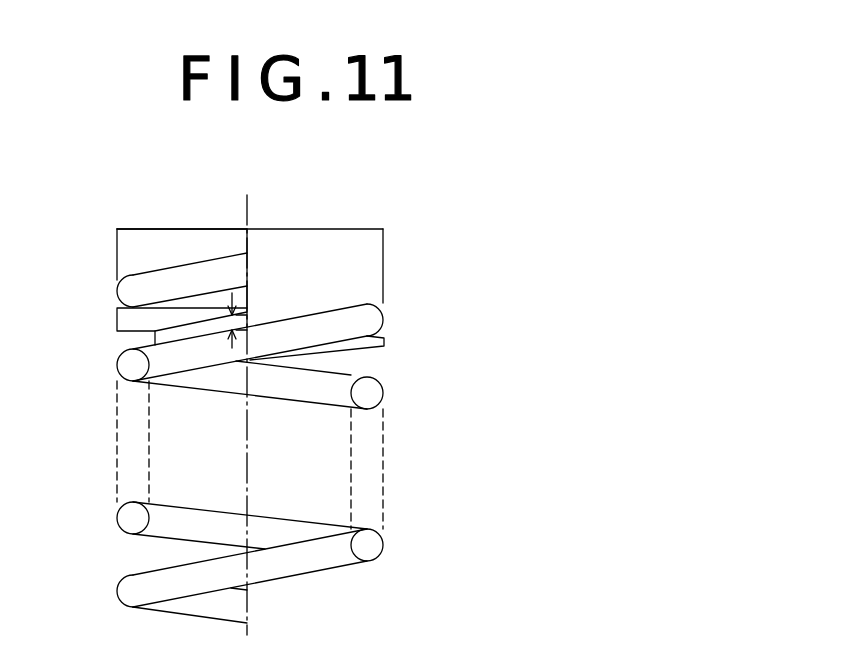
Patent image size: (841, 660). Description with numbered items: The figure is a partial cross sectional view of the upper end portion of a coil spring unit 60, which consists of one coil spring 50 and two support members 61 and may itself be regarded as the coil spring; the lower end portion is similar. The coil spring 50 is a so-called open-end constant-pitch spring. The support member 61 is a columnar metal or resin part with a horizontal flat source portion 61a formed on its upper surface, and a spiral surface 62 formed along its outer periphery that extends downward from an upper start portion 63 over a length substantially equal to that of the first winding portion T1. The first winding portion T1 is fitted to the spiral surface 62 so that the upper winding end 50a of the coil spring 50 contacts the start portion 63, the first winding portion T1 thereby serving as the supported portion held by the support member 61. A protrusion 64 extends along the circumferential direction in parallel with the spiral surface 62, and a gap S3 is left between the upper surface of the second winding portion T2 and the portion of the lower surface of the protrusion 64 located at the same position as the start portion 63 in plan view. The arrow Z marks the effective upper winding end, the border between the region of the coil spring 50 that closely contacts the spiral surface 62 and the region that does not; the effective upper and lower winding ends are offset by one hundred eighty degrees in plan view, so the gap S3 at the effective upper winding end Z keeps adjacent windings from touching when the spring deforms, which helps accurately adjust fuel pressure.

The coil spring 50 is at (298, 389).
The upper winding end 50a is at (243, 252).
The coil spring unit 60 is at (266, 265).
The support member 61 is at (370, 252).
The horizontal flat source portion 61a is at (148, 238).
The spiral surface 62 is at (117, 280).
The start portion 63 is at (249, 268).
The protrusion 64 is at (117, 333).
The first winding portion T1 is at (184, 284).
The second winding portion T2 is at (250, 342).
The gap S3 is at (250, 318).
The effective upper winding end Z is at (250, 333).